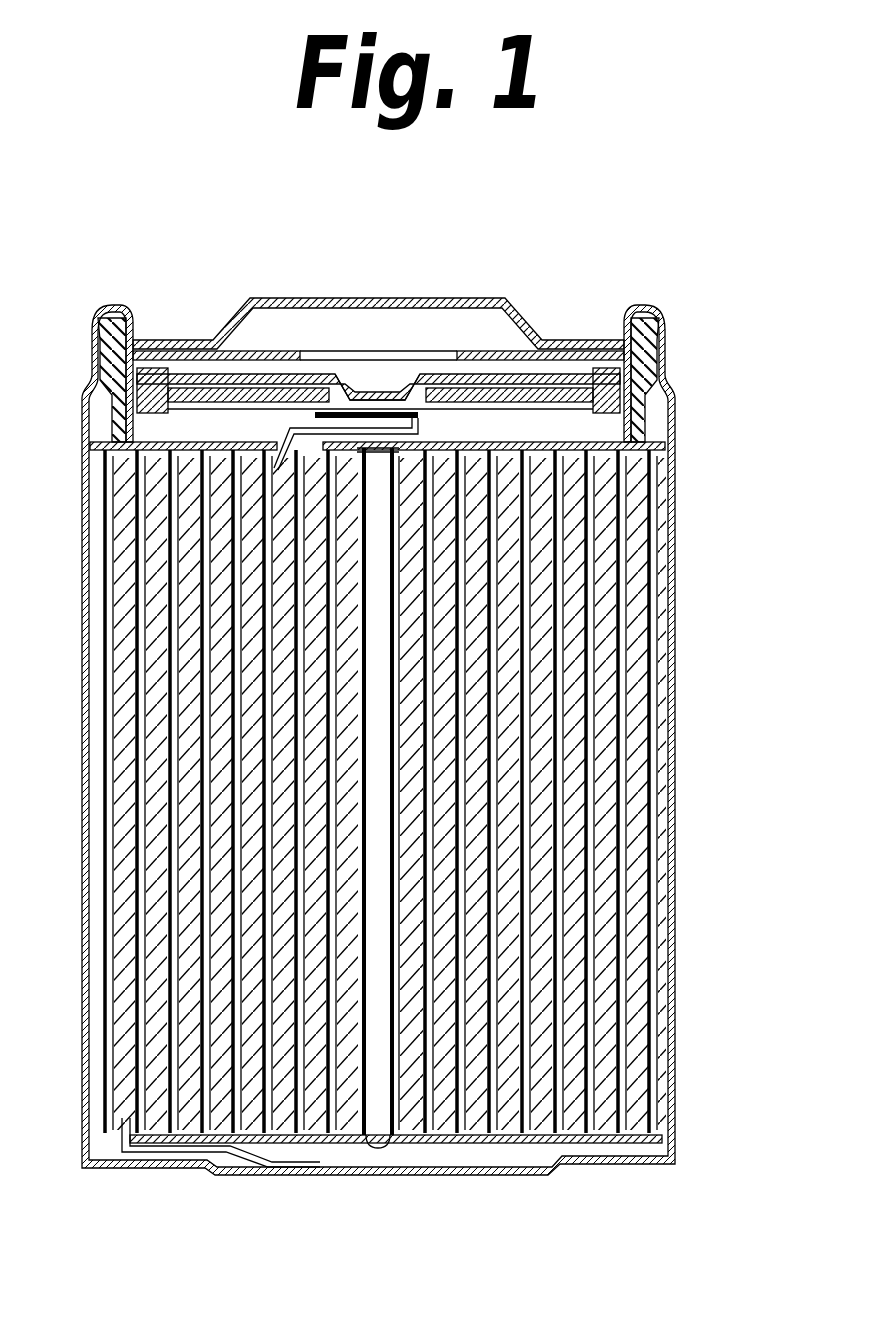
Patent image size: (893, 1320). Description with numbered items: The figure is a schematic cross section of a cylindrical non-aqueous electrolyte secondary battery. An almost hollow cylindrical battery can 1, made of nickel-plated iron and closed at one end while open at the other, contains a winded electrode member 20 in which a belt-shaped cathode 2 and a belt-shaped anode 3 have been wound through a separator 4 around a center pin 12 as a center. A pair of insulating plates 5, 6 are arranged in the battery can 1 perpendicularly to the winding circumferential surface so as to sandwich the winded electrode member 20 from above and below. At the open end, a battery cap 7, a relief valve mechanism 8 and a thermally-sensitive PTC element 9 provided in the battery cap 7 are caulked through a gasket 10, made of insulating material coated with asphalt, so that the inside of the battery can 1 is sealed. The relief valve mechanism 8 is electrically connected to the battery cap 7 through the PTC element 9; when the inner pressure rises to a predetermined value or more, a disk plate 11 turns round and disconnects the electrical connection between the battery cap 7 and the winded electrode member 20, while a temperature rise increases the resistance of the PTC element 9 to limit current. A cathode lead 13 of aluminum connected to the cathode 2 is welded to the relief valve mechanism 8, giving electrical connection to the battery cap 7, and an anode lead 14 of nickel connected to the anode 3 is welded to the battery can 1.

The battery can 1 is at (680, 517).
The cathode 2 is at (593, 708).
The anode 3 is at (627, 752).
The separator 4 is at (620, 798).
The insulating plate 5 is at (663, 443).
The insulating plate 6 is at (655, 1140).
The battery cap 7 is at (360, 298).
The relief valve mechanism 8 is at (490, 360).
The PTC element 9 is at (623, 350).
The gasket 10 is at (640, 412).
The disk plate 11 is at (452, 372).
The center pin 12 is at (378, 875).
The cathode lead 13 is at (345, 380).
The anode lead 14 is at (243, 1176).
The winded electrode member 20 is at (439, 791).